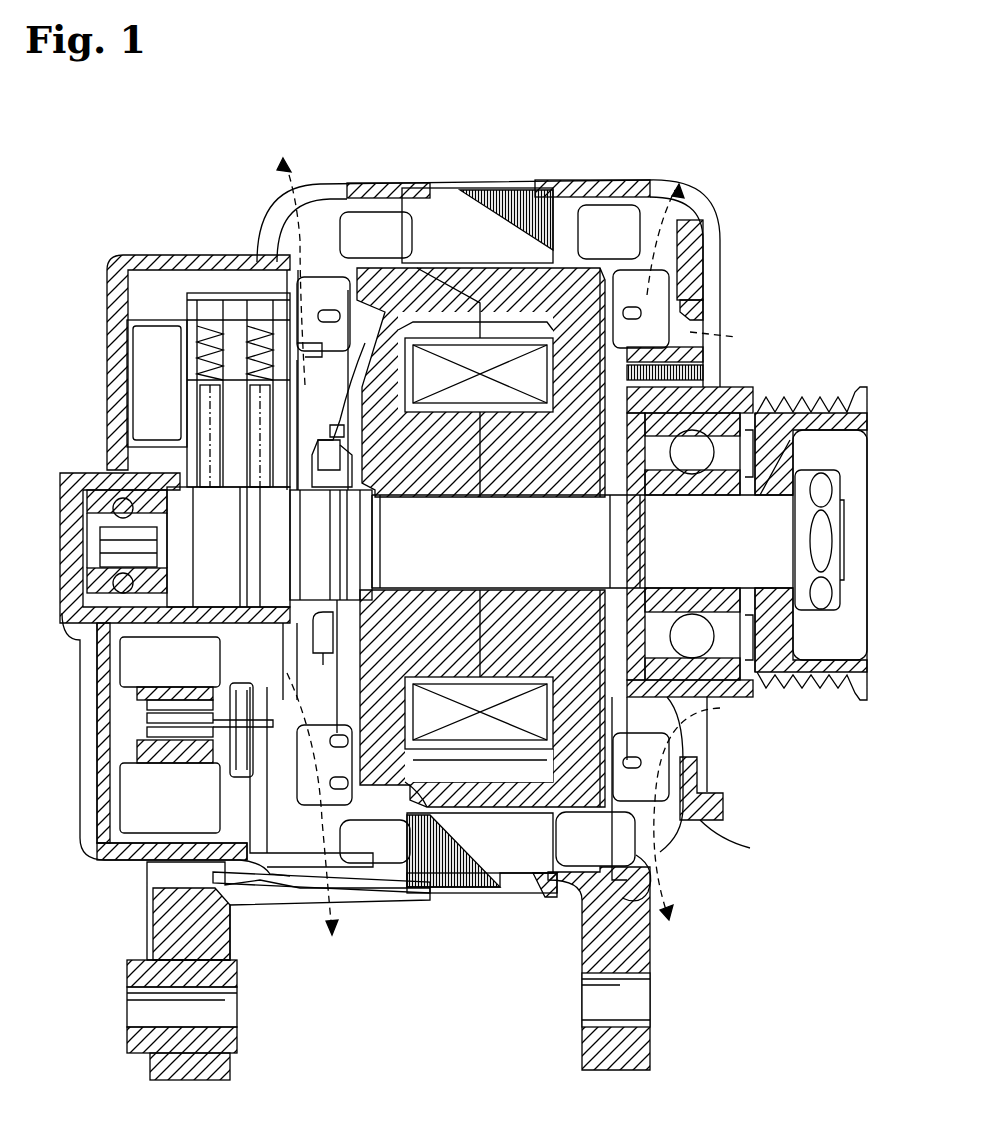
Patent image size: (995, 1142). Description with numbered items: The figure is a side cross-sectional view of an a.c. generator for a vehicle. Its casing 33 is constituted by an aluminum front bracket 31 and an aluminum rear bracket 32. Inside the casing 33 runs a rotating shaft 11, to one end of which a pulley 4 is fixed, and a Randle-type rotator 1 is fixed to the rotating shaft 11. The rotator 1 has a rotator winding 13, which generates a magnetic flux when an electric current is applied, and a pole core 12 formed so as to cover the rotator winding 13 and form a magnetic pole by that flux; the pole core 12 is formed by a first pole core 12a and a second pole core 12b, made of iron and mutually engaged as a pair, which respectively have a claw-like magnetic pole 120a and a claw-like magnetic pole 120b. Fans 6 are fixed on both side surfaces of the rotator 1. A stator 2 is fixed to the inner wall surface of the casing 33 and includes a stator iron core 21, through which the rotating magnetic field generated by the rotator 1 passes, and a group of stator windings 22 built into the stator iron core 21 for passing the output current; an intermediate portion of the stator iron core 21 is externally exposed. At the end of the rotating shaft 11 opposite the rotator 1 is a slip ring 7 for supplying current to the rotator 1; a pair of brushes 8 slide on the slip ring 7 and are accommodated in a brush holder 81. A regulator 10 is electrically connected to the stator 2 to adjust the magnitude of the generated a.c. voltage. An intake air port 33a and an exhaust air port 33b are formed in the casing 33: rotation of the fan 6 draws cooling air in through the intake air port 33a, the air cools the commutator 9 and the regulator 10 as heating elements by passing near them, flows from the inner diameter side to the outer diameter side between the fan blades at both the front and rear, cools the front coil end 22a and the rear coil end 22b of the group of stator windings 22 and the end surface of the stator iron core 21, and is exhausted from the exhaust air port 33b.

The rotator 1 is at (503, 455).
The rotating shaft 11 is at (763, 507).
The pole core 12 is at (493, 455).
The first pole core 12a is at (570, 280).
The second pole core 12b is at (380, 280).
The rotator winding 13 is at (470, 352).
The stator 2 is at (520, 900).
The stator iron core 21 is at (442, 898).
The group of stator windings 22 is at (620, 842).
The front coil end 22a is at (640, 880).
The rear coil end 22b is at (352, 868).
The claw-like magnetic pole 120a is at (470, 820).
The claw-like magnetic pole 120b is at (398, 840).
The front bracket 31 is at (720, 258).
The rear bracket 32 is at (70, 640).
The casing 33 is at (553, 916).
The intake air port 33a is at (120, 336).
The exhaust air port 33b is at (355, 189).
The pulley 4 is at (833, 700).
The fan 6 is at (330, 290).
The slip ring 7 is at (218, 503).
The brushes 8 is at (188, 390).
The brush holder 81 is at (218, 505).
The commutator 9 is at (148, 808).
The regulator 10 is at (178, 358).